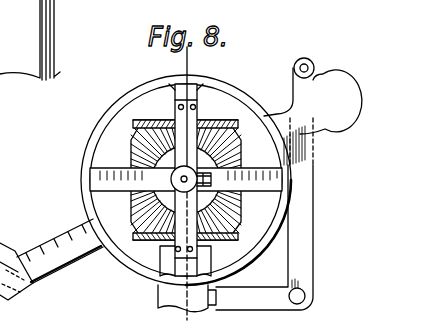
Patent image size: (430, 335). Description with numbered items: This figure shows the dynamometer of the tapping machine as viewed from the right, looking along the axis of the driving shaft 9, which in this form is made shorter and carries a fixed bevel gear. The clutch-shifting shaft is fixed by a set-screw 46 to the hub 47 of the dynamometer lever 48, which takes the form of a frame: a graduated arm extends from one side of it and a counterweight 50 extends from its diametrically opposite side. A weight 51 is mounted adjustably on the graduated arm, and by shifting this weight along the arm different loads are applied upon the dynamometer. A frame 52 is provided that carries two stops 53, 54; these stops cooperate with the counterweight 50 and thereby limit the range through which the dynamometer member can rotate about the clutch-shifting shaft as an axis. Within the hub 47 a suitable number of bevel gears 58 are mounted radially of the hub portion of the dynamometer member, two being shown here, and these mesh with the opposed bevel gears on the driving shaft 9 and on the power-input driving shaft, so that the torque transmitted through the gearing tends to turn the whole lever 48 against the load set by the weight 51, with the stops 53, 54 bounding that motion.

The driving shaft 9 is at (187, 185).
The set-screw 46 is at (213, 162).
The hub 47 is at (128, 153).
The dynamometer lever 48 is at (112, 104).
The counterweight 50 is at (332, 83).
The weight 51 is at (14, 248).
The frame 52 is at (306, 253).
The stop 53 is at (309, 61).
The stop 54 is at (306, 294).
The bevel gears 58 is at (198, 138).